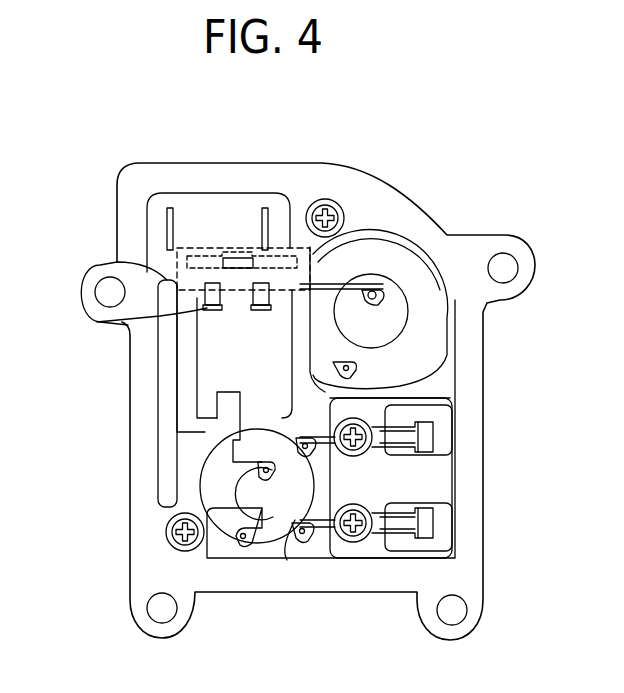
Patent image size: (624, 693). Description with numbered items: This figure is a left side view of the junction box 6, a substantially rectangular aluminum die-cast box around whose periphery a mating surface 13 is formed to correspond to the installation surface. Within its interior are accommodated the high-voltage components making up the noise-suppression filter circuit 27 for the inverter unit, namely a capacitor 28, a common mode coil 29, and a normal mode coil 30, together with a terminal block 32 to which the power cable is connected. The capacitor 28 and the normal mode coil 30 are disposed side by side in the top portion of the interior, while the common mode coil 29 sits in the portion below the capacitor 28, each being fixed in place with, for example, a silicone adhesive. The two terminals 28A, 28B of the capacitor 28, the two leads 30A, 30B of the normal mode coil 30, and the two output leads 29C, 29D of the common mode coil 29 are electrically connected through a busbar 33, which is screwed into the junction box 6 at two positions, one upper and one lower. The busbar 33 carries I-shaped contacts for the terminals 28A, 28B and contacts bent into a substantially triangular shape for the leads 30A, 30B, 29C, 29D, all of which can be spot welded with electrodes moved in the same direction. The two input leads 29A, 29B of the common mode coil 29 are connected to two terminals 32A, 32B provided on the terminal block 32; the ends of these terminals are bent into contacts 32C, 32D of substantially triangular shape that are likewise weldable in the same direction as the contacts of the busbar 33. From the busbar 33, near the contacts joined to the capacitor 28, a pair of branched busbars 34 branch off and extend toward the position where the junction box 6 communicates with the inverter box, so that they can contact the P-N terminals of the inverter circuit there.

The junction box 6 is at (361, 174).
The mating surface 13 is at (148, 440).
The noise-suppression filter circuit 27 is at (427, 391).
The capacitor 28 is at (97, 263).
The terminal of the capacitor 28A is at (110, 321).
The terminal of the capacitor 28B is at (248, 312).
The common mode coil 29 is at (213, 468).
The input lead of the common mode coil 29A is at (288, 562).
The input lead of the common mode coil 29B is at (295, 437).
The output lead of the common mode coil 29C is at (245, 547).
The output lead of the common mode coil 29D is at (266, 482).
The normal mode coil 30 is at (393, 250).
The lead of the normal mode coil 30A is at (383, 300).
The lead of the normal mode coil 30B is at (358, 364).
The terminal block 32 is at (375, 545).
The terminal of the terminal block 32A is at (338, 493).
The terminal of the terminal block 32B is at (312, 420).
The contact of the terminal block terminal 32C is at (302, 546).
The contact of the terminal block terminal 32D is at (300, 462).
The busbar 33 is at (186, 371).
The branched busbars 34 is at (170, 216).